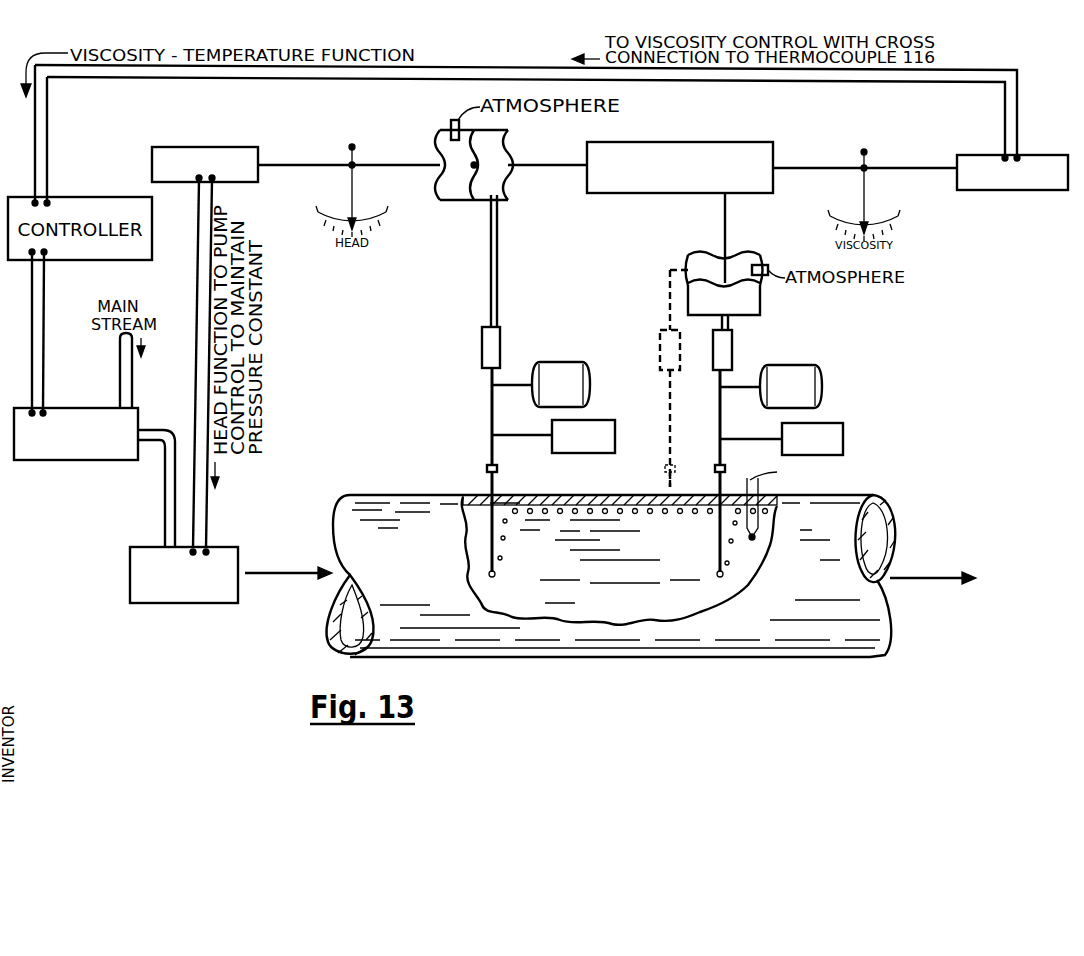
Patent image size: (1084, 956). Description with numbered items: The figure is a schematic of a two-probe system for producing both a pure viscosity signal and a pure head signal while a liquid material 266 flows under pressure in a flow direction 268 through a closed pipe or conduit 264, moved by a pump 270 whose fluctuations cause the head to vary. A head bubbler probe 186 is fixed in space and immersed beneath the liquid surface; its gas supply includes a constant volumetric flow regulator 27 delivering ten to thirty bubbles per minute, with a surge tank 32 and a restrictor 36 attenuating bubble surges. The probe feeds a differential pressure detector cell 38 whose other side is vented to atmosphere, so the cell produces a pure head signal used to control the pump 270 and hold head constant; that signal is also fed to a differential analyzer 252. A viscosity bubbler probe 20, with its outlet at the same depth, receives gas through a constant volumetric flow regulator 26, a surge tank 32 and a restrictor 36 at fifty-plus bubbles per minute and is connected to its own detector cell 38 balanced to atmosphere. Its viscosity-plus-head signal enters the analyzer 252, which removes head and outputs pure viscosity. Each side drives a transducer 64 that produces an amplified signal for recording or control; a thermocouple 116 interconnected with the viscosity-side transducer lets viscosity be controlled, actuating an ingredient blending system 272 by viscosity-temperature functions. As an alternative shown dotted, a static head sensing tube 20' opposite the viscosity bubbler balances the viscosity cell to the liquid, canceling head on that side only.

The viscosity bubbler probe 20 is at (761, 477).
The static head sensing tube 20' is at (645, 487).
The constant volumetric flow regulator 26 is at (824, 451).
The constant volumetric flow regulator 27 is at (595, 449).
The surge tank 32 is at (572, 397).
The restrictor 36 is at (500, 345).
The differential pressure detector cell 38 is at (508, 149).
The transducer 64 is at (206, 147).
The thermocouple 116 is at (758, 540).
The head bubbler probe 186 is at (485, 506).
The differential analyzer 252 is at (700, 142).
The closed pipe or conduit 264 is at (692, 658).
The liquid material 266 is at (600, 604).
The flow direction 268 is at (930, 590).
The pump 270 is at (140, 548).
The ingredient blending system 272 is at (112, 408).